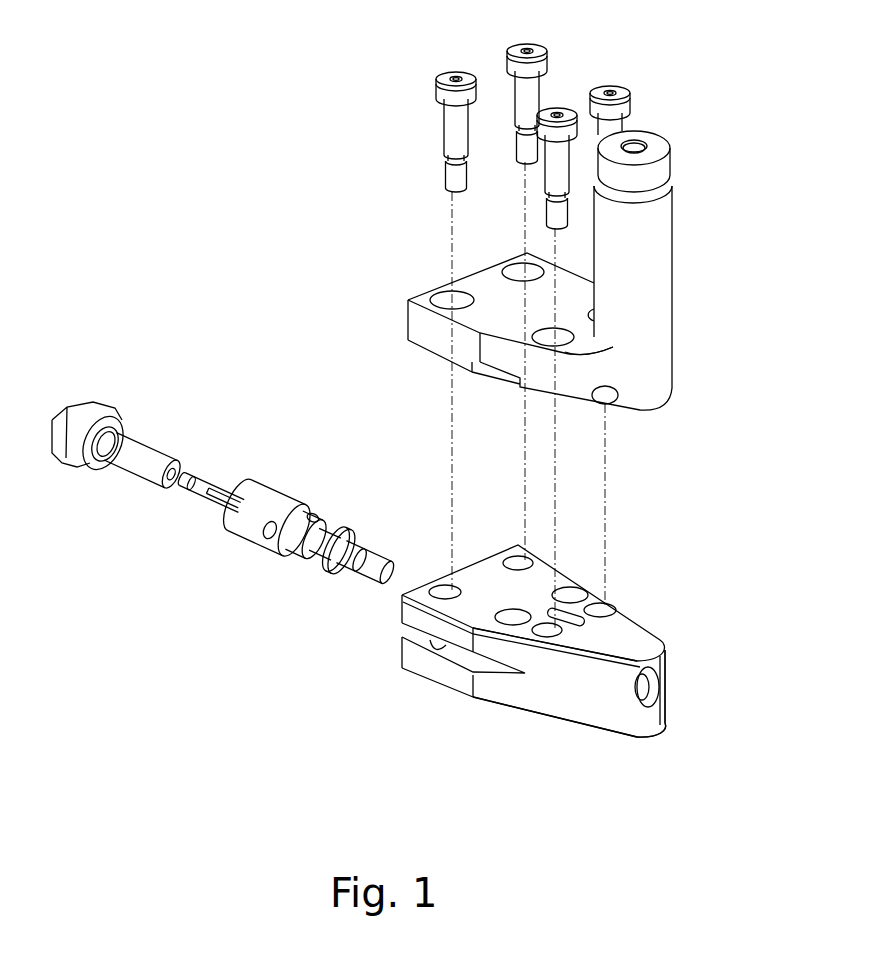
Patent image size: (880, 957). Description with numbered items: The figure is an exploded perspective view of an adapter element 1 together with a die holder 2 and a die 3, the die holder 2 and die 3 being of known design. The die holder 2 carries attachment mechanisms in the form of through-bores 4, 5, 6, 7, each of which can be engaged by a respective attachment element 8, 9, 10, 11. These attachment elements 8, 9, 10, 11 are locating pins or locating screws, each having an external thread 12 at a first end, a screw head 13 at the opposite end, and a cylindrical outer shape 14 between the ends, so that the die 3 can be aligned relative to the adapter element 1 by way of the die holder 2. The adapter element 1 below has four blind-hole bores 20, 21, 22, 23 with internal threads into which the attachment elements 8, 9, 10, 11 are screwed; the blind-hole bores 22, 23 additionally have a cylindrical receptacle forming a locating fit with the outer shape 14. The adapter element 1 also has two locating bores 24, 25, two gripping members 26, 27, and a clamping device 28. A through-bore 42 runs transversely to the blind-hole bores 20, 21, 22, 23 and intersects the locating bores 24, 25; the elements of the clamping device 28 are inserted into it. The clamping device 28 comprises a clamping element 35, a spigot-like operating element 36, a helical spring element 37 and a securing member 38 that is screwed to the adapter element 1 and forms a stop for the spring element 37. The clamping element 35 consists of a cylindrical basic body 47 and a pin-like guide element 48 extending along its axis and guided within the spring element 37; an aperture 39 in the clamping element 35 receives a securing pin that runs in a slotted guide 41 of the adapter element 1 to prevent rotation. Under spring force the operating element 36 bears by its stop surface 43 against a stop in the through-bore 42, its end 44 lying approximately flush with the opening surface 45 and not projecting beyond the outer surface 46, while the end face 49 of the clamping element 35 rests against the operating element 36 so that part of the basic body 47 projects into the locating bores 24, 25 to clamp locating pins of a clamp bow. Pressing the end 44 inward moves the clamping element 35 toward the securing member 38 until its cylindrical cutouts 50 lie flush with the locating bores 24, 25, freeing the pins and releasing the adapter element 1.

The adapter element 1 is at (455, 755).
The die holder 2 is at (695, 245).
The die 3 is at (680, 155).
The through-bore 4 is at (430, 292).
The through-bore 5 is at (500, 263).
The through-bore 6 is at (592, 337).
The through-bore 7 is at (592, 312).
The attachment element 8 is at (437, 92).
The attachment element 9 is at (507, 58).
The attachment element 10 is at (632, 102).
The attachment element 11 is at (572, 106).
The external thread 12 is at (442, 173).
The screw head 13 is at (438, 66).
The cylindrical outer shape 14 is at (541, 85).
The blind-hole bore 20 is at (443, 585).
The blind-hole bore 21 is at (515, 548).
The blind-hole bore 22 is at (567, 637).
The blind-hole bore 23 is at (612, 600).
The locating bore 24 is at (533, 641).
The locating bore 25 is at (593, 578).
The gripping member 26 is at (453, 662).
The gripping member 27 is at (574, 557).
The clamping device 28 is at (262, 619).
The clamping element 35 is at (282, 492).
The operating element 36 is at (360, 543).
The spring element 37 is at (143, 488).
The securing member 38 is at (60, 467).
The aperture 39 is at (310, 512).
The slotted guide 41 is at (605, 630).
The through-bore 42 is at (669, 672).
The stop surface 43 is at (334, 570).
The end 44 is at (364, 600).
The opening surface 45 is at (650, 713).
The outer surface 46 is at (660, 707).
The cylindrical basic body 47 is at (236, 541).
The pin-like guide element 48 is at (213, 478).
The end face 49 is at (325, 523).
The cutout 50 is at (268, 542).